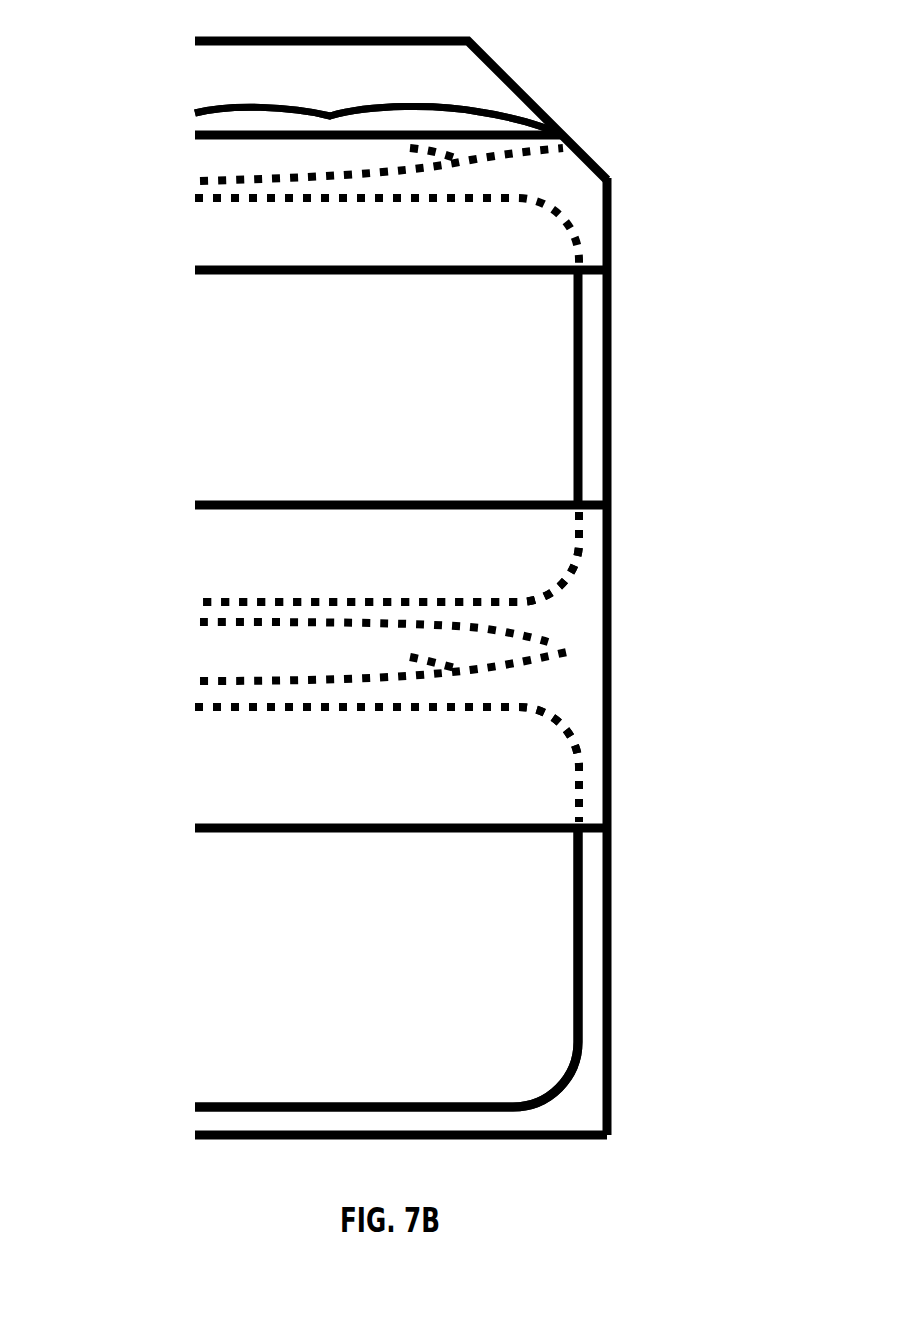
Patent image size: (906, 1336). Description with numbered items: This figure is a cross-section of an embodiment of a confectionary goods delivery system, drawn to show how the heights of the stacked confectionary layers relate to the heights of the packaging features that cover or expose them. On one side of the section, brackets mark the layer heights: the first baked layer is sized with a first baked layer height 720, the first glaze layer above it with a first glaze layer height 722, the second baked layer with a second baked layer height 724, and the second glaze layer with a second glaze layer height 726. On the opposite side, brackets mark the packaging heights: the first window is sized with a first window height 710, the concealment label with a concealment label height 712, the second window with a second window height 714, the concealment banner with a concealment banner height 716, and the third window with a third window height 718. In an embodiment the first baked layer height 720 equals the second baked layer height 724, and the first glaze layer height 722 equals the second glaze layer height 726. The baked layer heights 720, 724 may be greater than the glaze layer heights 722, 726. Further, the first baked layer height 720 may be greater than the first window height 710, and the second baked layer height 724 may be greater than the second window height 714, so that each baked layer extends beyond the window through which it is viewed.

The first window height 710 is at (635, 830).
The concealment label height 712 is at (635, 512).
The second window height 714 is at (635, 273).
The concealment banner height 716 is at (635, 135).
The third window height 718 is at (635, 40).
The first baked layer height 720 is at (172, 707).
The first glaze layer height 722 is at (172, 623).
The second baked layer height 724 is at (172, 198).
The second glaze layer height 726 is at (172, 115).